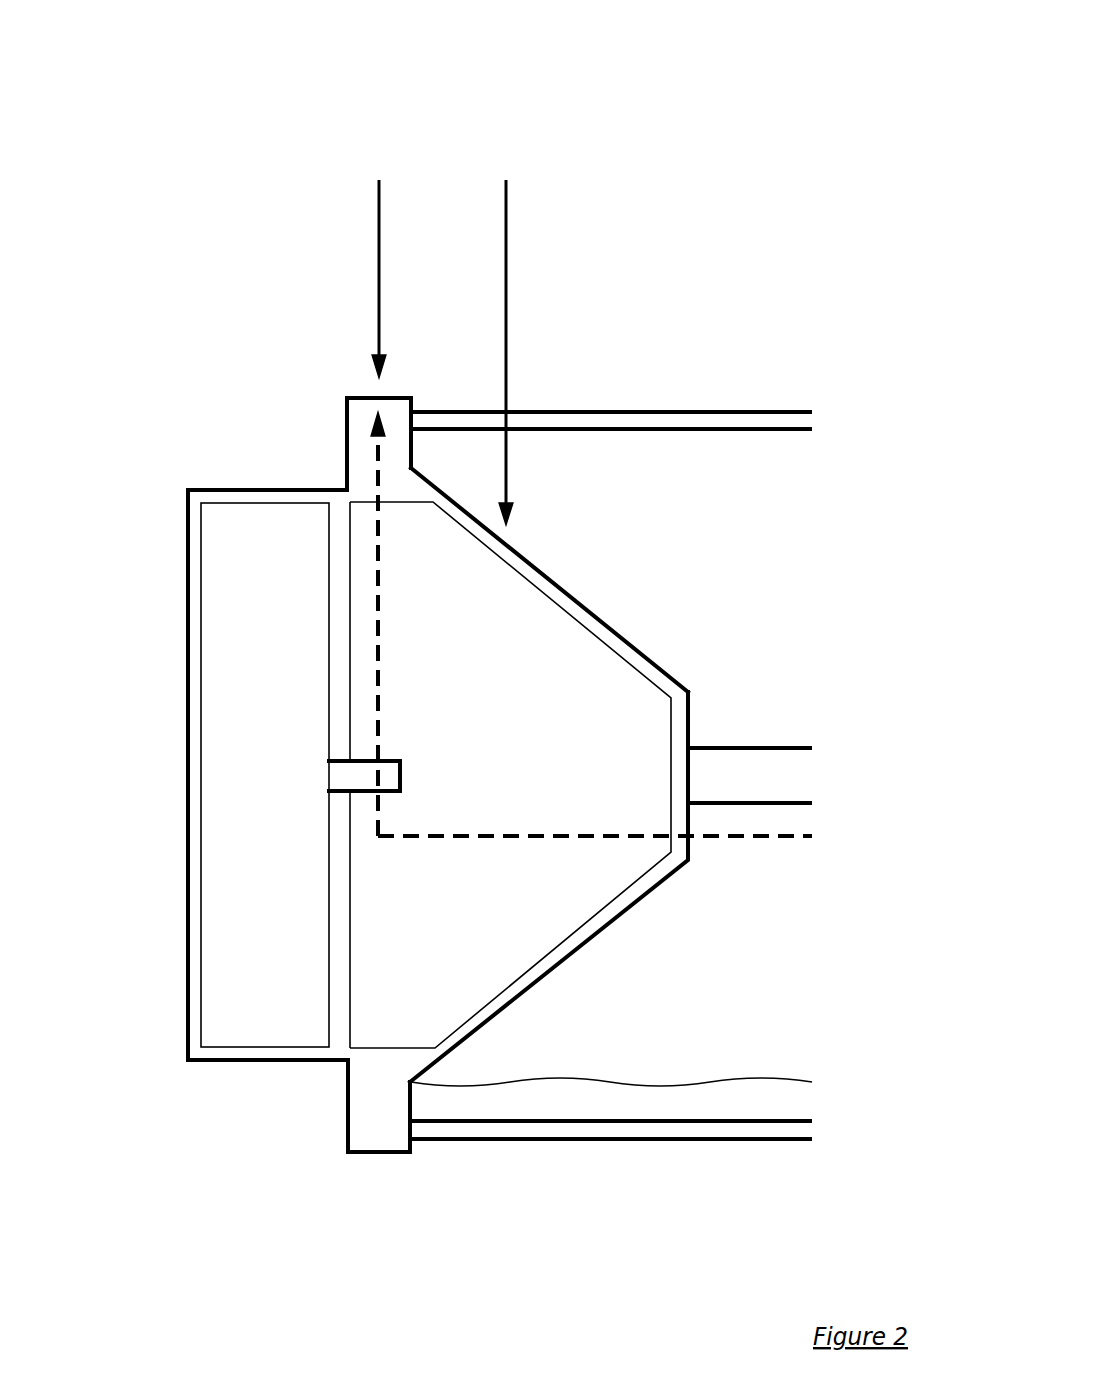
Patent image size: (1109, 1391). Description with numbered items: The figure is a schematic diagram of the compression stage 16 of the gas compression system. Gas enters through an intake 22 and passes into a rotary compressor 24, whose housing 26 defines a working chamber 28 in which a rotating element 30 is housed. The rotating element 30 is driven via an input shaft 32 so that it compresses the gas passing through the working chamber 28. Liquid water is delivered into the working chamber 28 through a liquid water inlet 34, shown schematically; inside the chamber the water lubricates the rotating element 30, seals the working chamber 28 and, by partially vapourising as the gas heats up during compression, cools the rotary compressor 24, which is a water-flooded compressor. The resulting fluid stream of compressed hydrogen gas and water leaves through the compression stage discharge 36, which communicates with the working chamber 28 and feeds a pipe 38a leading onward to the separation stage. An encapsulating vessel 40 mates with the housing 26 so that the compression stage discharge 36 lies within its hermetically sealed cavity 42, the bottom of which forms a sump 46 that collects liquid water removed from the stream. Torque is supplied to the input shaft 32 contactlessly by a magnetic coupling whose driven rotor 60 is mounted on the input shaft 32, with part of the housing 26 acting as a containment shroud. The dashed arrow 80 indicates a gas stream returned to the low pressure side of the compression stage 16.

The compression stage 16 is at (711, 283).
The intake 22 is at (385, 297).
The rotary compressor 24 is at (200, 893).
The housing 26 is at (427, 1140).
The working chamber 28 is at (562, 955).
The rotating element 30 is at (537, 615).
The input shaft 32 is at (378, 762).
The liquid water inlet 34 is at (512, 317).
The compression stage discharge 36 is at (798, 743).
The pipe 38a is at (695, 763).
The encapsulating vessel 40 is at (748, 418).
The cavity 42 is at (723, 548).
The sump 46 is at (727, 1087).
The driven rotor 60 is at (235, 1040).
The dashed arrow 80 is at (745, 838).